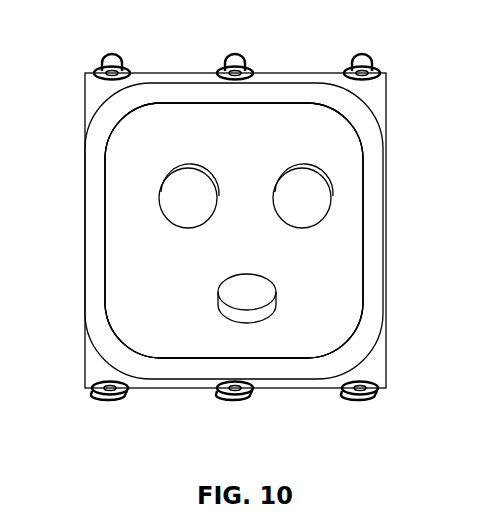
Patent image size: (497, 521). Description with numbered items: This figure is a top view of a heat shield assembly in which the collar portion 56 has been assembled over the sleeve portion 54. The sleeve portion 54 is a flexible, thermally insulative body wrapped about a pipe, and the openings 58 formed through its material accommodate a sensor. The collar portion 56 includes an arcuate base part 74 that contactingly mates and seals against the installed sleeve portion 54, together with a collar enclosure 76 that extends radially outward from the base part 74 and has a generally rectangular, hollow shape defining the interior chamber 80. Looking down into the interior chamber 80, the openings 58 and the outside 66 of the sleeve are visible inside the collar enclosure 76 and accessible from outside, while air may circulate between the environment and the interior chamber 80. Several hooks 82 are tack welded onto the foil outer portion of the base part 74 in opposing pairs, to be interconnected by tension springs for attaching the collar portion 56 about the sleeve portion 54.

The sleeve portion 54 is at (324, 303).
The collar portion 56 is at (372, 201).
The opening 58 is at (292, 170).
The outside of the sleeve 66 is at (335, 265).
The base part 74 is at (373, 102).
The collar enclosure 76 is at (378, 163).
The interior chamber 80 is at (155, 266).
The hooks 82 is at (102, 71).